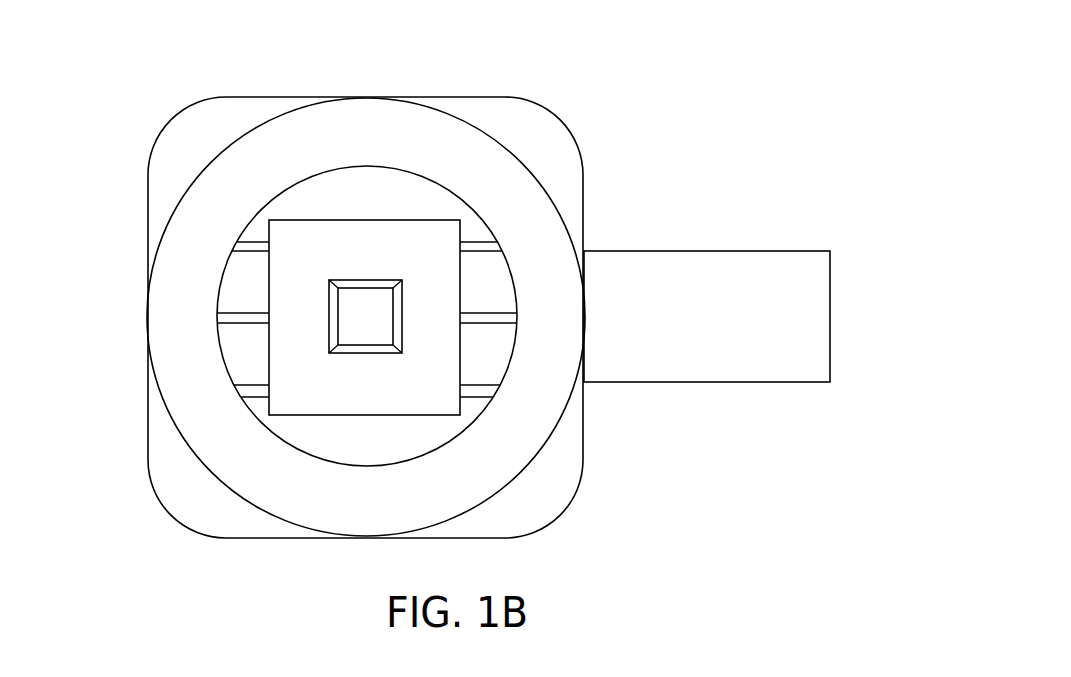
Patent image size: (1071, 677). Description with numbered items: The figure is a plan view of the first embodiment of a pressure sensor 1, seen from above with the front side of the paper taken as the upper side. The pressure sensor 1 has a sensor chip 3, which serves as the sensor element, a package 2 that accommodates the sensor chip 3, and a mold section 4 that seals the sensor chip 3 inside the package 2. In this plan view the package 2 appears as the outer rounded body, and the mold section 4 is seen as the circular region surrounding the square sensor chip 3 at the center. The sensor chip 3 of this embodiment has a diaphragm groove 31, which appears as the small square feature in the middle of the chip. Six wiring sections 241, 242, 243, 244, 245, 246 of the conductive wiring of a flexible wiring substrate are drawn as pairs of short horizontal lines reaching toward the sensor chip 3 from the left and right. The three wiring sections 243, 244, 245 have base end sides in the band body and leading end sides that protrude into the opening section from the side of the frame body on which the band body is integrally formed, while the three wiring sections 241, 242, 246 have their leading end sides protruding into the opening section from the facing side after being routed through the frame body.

The pressure sensor 1 is at (622, 80).
The package 2 is at (150, 107).
The sensor chip 3 is at (378, 325).
The diaphragm groove 31 is at (402, 393).
The mold section 4 is at (373, 195).
The wiring section 241 is at (243, 318).
The wiring section 242 is at (255, 392).
The wiring section 243 is at (487, 388).
The wiring section 244 is at (490, 313).
The wiring section 245 is at (477, 243).
The wiring section 246 is at (252, 245).